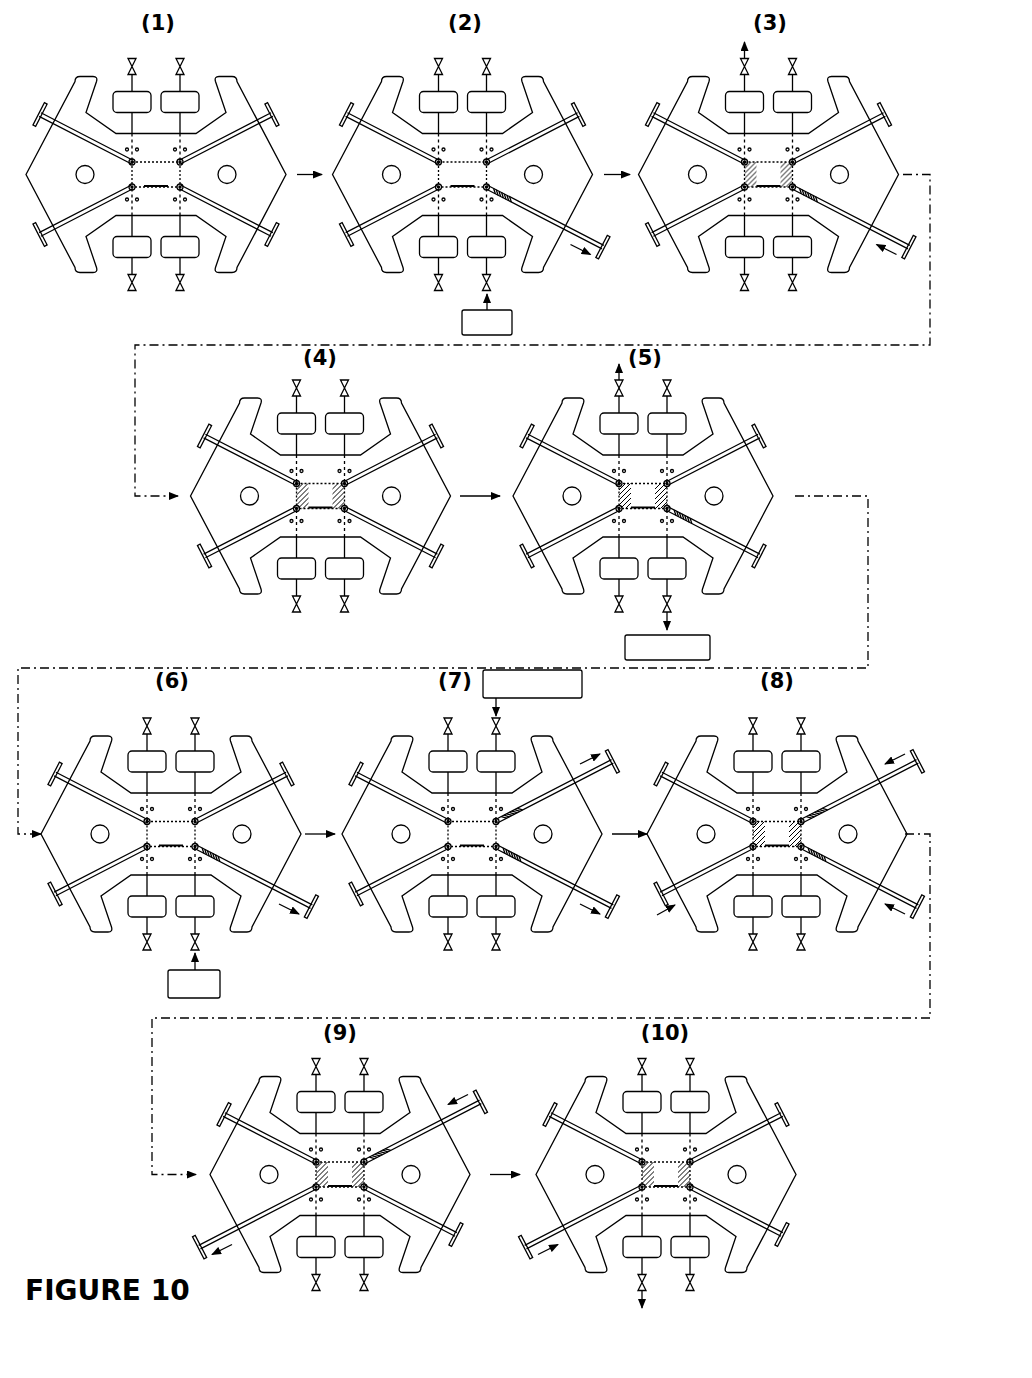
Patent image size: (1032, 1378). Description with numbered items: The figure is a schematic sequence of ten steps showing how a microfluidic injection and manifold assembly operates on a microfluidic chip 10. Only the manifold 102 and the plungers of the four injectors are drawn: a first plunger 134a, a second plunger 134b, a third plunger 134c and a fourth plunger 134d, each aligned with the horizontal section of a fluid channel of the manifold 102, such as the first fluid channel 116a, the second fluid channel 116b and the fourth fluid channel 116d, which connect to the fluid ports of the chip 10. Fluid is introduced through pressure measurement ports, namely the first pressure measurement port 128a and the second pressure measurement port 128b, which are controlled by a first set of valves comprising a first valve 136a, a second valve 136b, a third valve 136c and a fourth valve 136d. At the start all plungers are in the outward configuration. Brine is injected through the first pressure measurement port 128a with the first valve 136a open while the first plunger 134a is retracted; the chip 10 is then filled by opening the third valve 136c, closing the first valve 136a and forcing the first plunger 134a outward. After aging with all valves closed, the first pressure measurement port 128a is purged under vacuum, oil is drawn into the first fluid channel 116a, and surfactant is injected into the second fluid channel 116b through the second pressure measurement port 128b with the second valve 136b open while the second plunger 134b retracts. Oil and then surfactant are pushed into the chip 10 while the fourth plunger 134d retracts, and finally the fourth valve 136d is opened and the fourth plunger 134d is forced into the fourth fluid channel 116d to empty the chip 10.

The microfluidic chip 10 is at (466, 675).
The manifold 102 is at (275, 210).
The first fluid channel 116a is at (493, 192).
The second fluid channel 116b is at (512, 808).
The fourth fluid channel 116d is at (640, 1187).
The first pressure measurement port 128a is at (506, 200).
The second pressure measurement port 128b is at (506, 812).
The first plunger 134a is at (266, 246).
The second plunger 134b is at (266, 104).
The third plunger 134c is at (46, 104).
The fourth plunger 134d is at (46, 244).
The first valve 136a is at (183, 291).
The second valve 136b is at (183, 58).
The third valve 136c is at (129, 58).
The fourth valve 136d is at (130, 291).